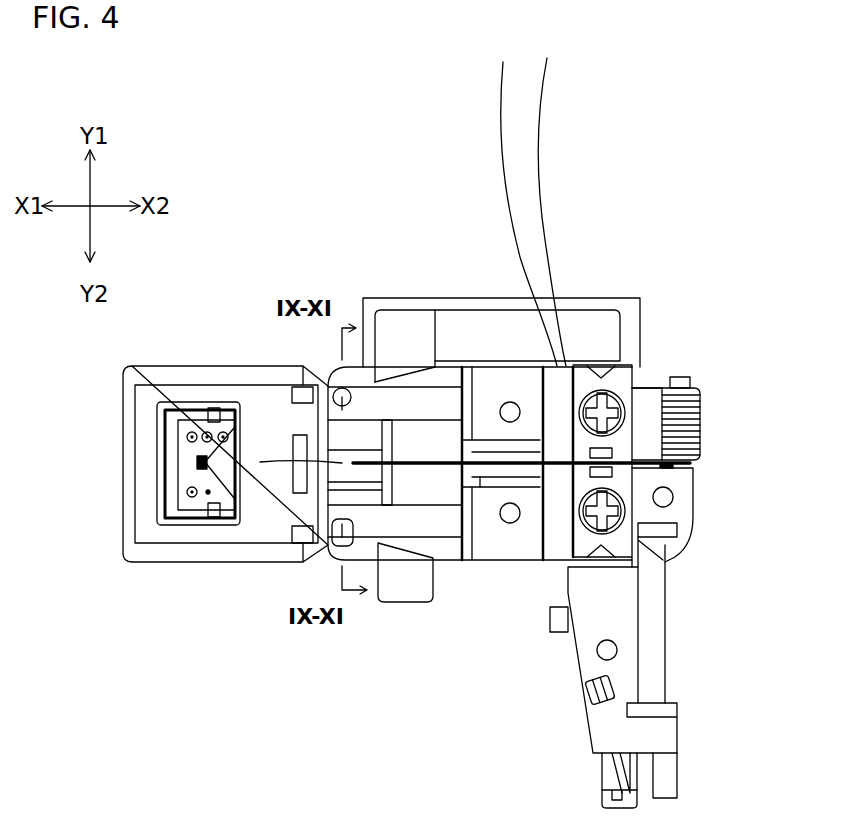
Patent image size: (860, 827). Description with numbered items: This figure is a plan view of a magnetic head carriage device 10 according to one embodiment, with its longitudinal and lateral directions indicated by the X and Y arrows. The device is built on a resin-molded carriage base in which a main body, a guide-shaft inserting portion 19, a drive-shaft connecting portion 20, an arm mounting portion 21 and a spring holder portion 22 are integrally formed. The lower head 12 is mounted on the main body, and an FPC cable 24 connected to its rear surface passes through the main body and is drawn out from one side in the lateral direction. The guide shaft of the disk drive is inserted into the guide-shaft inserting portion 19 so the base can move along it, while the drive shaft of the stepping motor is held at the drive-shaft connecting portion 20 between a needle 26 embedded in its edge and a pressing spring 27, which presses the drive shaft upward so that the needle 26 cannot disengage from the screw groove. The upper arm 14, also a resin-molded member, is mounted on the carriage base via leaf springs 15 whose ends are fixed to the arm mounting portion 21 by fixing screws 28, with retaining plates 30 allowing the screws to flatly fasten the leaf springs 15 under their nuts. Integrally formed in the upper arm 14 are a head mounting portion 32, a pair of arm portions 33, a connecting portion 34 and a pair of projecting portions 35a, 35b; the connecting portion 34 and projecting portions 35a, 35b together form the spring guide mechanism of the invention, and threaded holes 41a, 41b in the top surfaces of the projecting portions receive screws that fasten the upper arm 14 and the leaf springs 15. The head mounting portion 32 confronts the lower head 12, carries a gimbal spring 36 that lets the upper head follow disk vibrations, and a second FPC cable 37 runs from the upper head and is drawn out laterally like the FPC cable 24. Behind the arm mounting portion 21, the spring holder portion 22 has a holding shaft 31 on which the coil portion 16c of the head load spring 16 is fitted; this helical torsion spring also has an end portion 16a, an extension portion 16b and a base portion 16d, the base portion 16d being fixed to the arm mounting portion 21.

The magnetic head carriage device 10 is at (222, 106).
The lower head 12 is at (182, 459).
The upper arm 14 is at (264, 408).
The leaf springs 15 is at (573, 338).
The head load spring 16 is at (707, 393).
The end portion 16a is at (394, 489).
The extension portion 16b is at (490, 470).
The coil portion 16c is at (690, 412).
The base portion 16d is at (648, 382).
The guide-shaft inserting portion 19 is at (610, 305).
The drive-shaft connecting portion 20 is at (583, 752).
The arm mounting portion 21 is at (618, 570).
The spring holder portion 22 is at (706, 467).
The FPC cable 24 is at (538, 143).
The needle 26 is at (602, 768).
The pressing spring 27 is at (603, 798).
The fixing screws 28 is at (620, 393).
The retaining plates 30 is at (585, 383).
The holding shaft 31 is at (692, 370).
The head mounting portion 32 is at (259, 518).
The arm portions 33 is at (402, 340).
The connecting portion 34 is at (402, 507).
The projecting portion 35a is at (505, 560).
The projecting portion 35b is at (477, 358).
The gimbal spring 36 is at (172, 362).
The FPC cable 37 is at (497, 145).
The threaded hole 41a is at (512, 524).
The threaded hole 41b is at (516, 400).